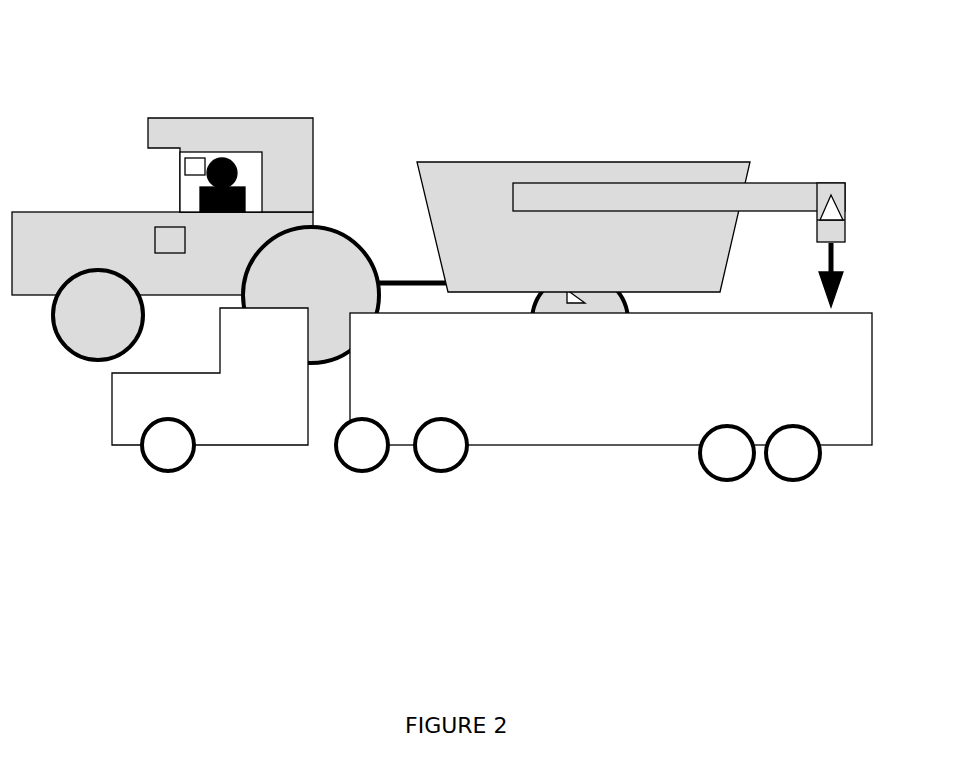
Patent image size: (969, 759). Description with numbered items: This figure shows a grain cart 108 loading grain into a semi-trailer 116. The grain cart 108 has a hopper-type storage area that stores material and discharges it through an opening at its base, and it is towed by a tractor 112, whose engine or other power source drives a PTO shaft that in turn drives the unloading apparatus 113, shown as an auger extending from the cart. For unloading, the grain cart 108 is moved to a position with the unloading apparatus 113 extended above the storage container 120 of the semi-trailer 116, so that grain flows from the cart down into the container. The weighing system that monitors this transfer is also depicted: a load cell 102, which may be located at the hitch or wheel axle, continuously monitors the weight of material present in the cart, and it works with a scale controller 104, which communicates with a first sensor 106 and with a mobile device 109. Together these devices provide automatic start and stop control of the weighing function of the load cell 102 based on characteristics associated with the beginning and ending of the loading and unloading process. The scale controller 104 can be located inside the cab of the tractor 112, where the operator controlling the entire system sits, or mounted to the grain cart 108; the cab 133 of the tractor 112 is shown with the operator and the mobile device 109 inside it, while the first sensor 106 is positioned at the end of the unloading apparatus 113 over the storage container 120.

The load cell 102 is at (578, 293).
The scale controller 104 is at (157, 228).
The first sensor 106 is at (845, 200).
The grain cart 108 is at (603, 162).
The mobile device 109 is at (185, 158).
The tractor 112 is at (42, 212).
The unloading apparatus 113 is at (796, 183).
The semi-trailer 116 is at (588, 443).
The storage container 120 is at (858, 313).
The tractor cab 133 is at (213, 118).